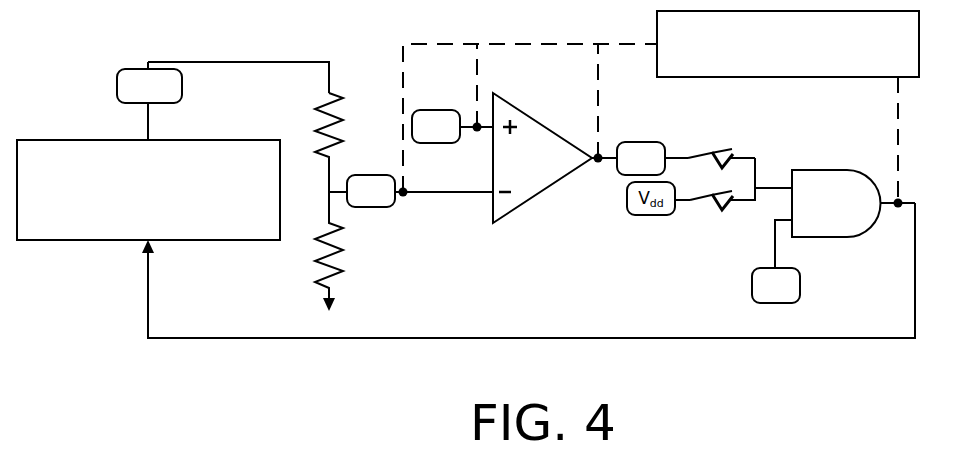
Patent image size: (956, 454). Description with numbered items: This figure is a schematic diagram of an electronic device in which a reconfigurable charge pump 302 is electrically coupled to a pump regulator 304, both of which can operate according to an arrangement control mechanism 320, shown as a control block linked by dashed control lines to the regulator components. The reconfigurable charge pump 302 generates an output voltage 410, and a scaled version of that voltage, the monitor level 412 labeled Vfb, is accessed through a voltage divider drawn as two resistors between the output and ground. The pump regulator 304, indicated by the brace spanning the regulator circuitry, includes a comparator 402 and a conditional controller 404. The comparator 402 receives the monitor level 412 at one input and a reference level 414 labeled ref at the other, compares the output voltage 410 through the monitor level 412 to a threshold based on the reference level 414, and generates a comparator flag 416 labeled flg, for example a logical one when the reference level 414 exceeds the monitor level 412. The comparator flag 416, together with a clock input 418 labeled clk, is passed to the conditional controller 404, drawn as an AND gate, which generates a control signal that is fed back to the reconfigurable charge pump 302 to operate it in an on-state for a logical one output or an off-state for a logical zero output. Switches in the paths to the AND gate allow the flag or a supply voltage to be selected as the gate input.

The reconfigurable charge pump 302 is at (254, 215).
The pump regulator 304 is at (885, 350).
The arrangement control mechanism 320 is at (802, 66).
The comparator 402 is at (542, 160).
The conditional controller 404 is at (823, 218).
The output voltage 410 is at (182, 80).
The monitor level 412 is at (387, 207).
The reference level 414 is at (455, 112).
The comparator flag 416 is at (617, 170).
The clock input 418 is at (752, 274).